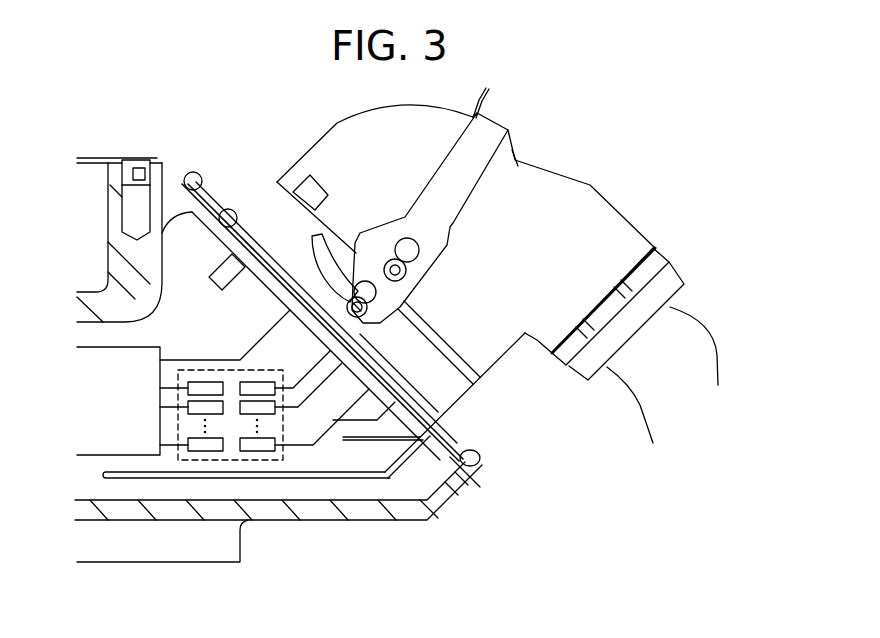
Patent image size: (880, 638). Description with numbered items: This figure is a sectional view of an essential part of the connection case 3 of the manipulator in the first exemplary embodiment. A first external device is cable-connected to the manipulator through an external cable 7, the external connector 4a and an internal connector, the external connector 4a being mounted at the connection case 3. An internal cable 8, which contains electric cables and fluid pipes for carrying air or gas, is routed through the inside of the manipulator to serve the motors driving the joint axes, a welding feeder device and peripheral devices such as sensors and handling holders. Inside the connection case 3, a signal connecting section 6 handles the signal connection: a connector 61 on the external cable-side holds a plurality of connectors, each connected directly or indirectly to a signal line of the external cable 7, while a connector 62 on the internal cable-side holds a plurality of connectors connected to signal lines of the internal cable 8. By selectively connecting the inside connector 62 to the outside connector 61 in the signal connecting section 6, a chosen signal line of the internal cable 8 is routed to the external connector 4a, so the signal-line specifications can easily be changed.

The external connector 4a is at (358, 158).
The connection case 3 is at (460, 487).
The hose 7 is at (647, 383).
The internal cable 8 is at (88, 447).
The signal connecting section 6 is at (264, 477).
The connector 61 is at (267, 451).
The connector 62 is at (212, 451).